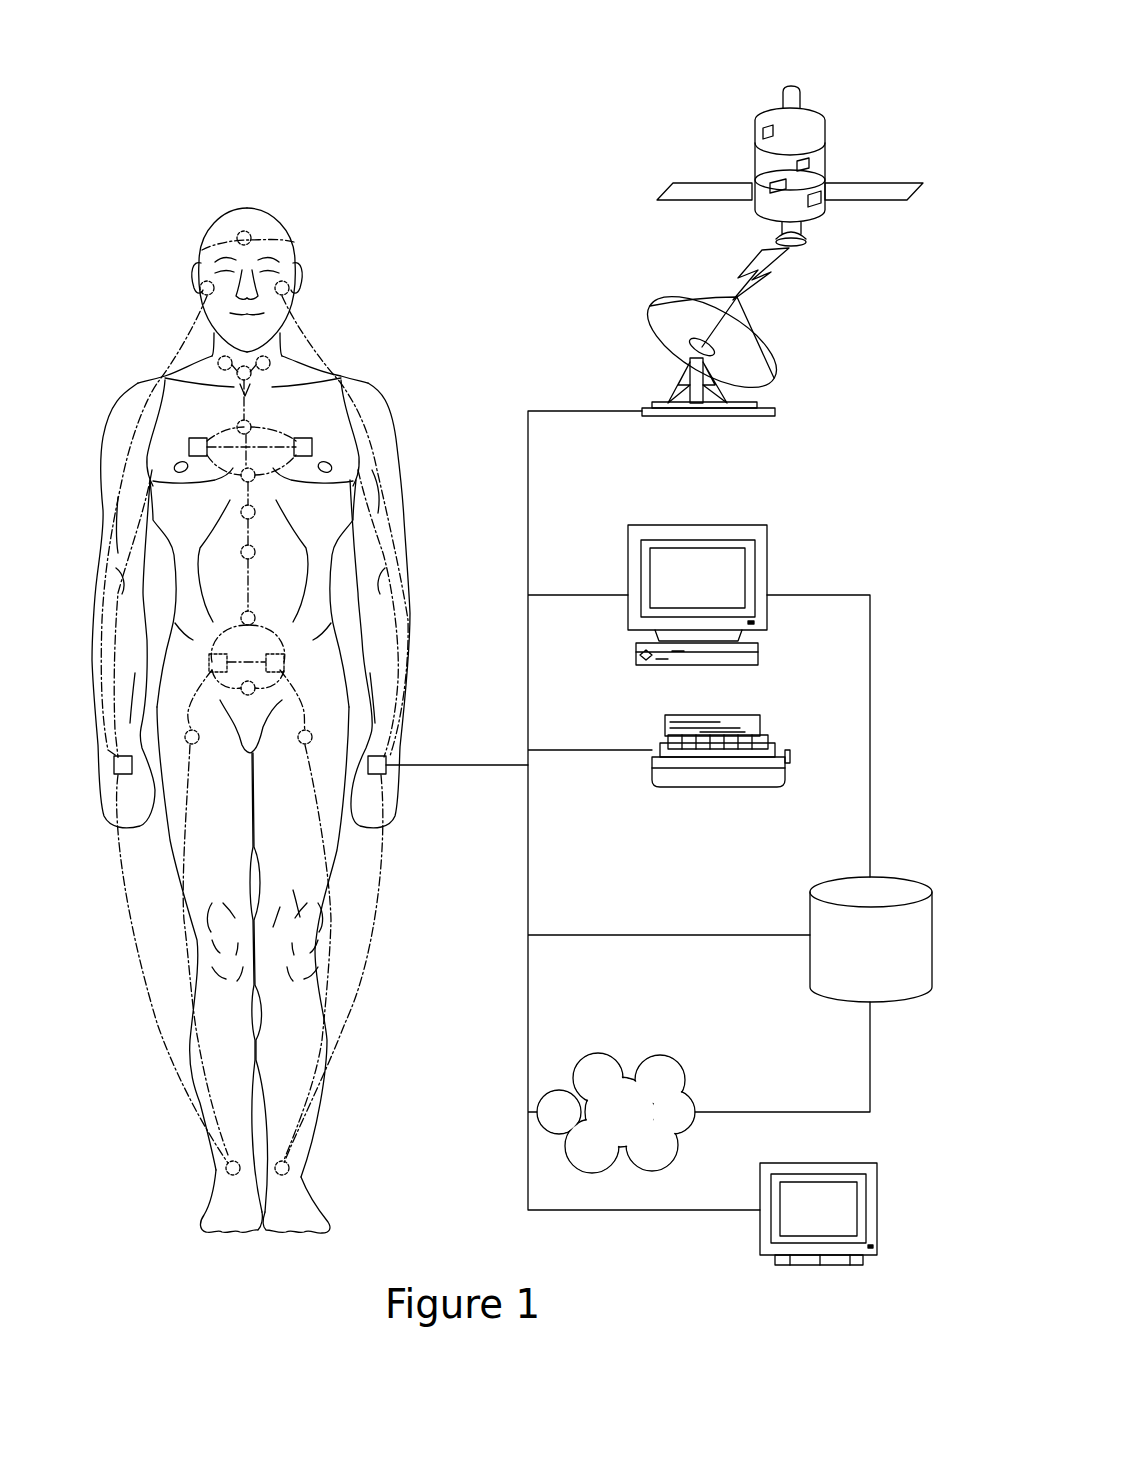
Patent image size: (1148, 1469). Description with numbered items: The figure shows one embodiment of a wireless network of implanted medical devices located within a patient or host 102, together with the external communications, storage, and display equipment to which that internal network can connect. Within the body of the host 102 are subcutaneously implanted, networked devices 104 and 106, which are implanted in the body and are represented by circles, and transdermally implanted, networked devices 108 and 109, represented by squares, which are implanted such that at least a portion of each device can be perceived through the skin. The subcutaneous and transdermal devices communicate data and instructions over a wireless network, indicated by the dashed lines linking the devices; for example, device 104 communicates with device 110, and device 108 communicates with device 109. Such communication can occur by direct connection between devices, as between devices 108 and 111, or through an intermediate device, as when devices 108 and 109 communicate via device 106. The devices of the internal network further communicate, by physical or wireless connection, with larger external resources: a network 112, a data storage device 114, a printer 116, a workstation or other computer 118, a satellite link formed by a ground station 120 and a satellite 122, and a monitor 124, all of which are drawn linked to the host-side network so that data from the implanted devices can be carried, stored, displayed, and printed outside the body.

The patient or host 102 is at (285, 223).
The subcutaneously implanted, networked device 104 is at (244, 230).
The subcutaneously implanted, networked device 106 is at (252, 505).
The transdermally implanted, networked device 108 is at (306, 438).
The transdermally implanted, networked device 109 is at (286, 660).
The device 110 is at (226, 1170).
The device 111 is at (198, 438).
The network 112 is at (592, 1053).
The data storage device 114 is at (870, 892).
The printer 116 is at (720, 787).
The workstation or other computer 118 is at (767, 552).
The satellite link 120 is at (770, 412).
The satellite link 122 is at (792, 86).
The monitor 124 is at (815, 1265).